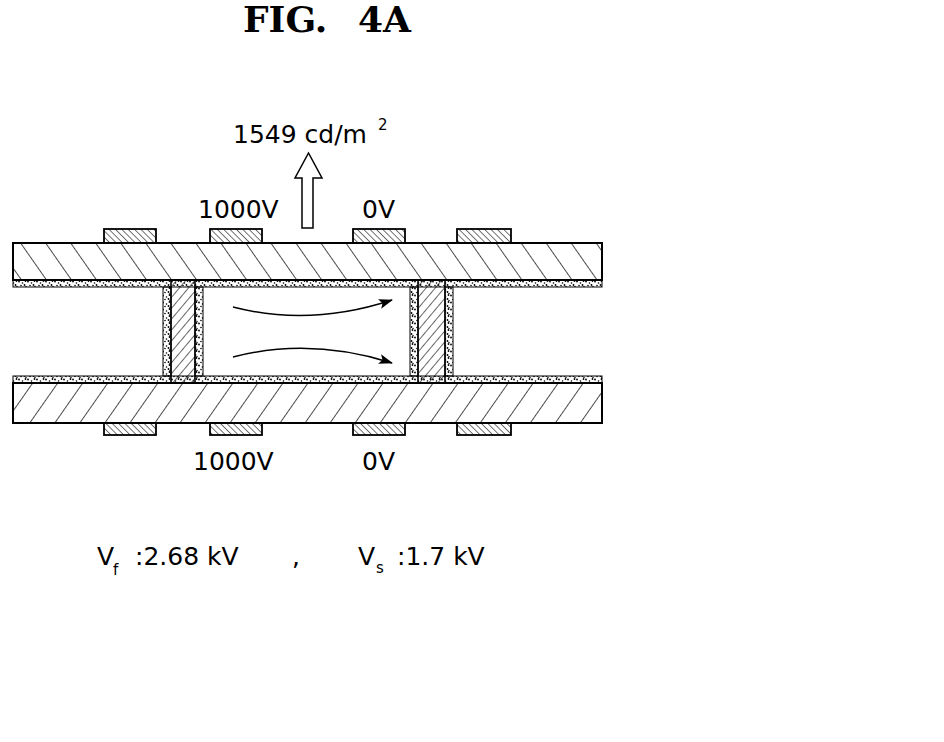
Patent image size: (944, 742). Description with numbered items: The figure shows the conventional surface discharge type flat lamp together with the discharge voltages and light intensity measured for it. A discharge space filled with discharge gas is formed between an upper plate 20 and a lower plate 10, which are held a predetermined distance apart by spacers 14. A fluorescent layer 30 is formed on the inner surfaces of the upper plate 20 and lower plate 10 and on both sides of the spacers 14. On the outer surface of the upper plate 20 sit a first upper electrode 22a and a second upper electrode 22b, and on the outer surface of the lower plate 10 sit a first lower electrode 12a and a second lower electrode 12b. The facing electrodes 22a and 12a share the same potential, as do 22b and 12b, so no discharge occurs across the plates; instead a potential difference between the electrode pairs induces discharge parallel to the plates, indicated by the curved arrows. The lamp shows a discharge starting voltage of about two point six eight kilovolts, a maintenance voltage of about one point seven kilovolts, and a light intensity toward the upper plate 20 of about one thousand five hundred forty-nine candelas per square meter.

The lower plate 10 is at (590, 403).
The upper plate 20 is at (588, 262).
The first lower electrode 12a is at (355, 433).
The second lower electrode 12b is at (210, 433).
The first upper electrode 22a is at (395, 228).
The second upper electrode 22b is at (210, 228).
The spacer 14 is at (183, 325).
The fluorescent layer 30 is at (408, 380).